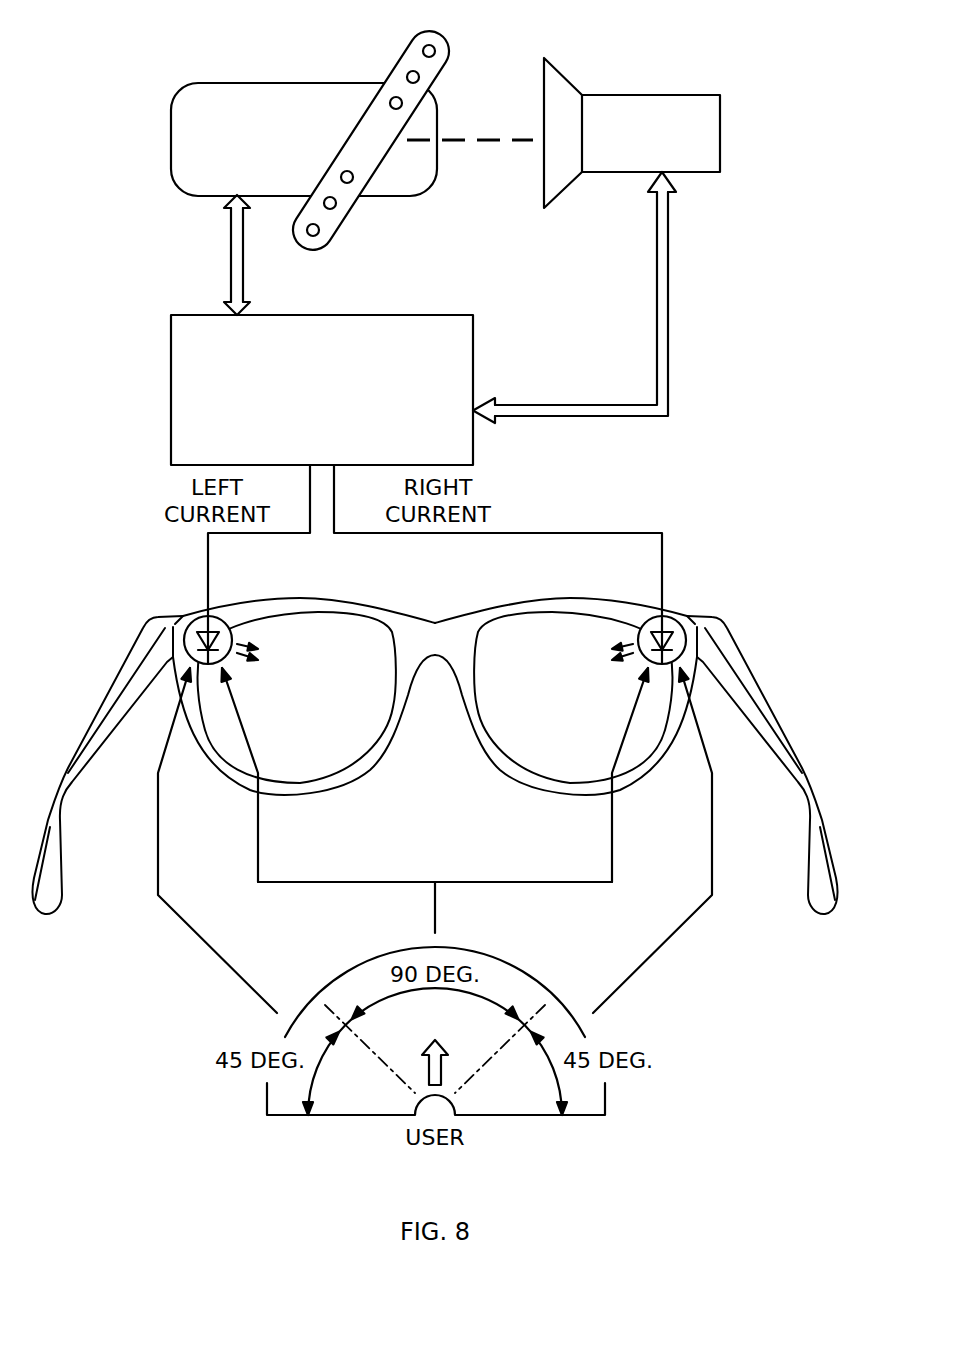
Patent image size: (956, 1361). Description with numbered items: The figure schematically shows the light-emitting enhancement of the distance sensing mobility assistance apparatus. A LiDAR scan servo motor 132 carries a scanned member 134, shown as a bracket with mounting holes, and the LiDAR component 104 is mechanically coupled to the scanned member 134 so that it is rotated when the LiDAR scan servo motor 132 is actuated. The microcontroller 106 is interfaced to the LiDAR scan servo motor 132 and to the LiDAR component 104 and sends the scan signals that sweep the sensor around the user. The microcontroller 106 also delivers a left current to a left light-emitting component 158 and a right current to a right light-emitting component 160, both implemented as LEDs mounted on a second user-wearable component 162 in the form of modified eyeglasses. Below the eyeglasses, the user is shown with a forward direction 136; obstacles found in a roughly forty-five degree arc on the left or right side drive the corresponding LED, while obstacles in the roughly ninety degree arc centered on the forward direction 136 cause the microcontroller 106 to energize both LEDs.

The LiDAR scan servo motor 132 is at (187, 102).
The scanned member 134 is at (407, 50).
The LiDAR component 104 is at (720, 95).
The microcontroller 106 is at (183, 315).
The left light-emitting component 158 is at (192, 628).
The right light-emitting component 160 is at (677, 627).
The second user-wearable component 162 is at (435, 625).
The forward direction 136 is at (415, 1069).